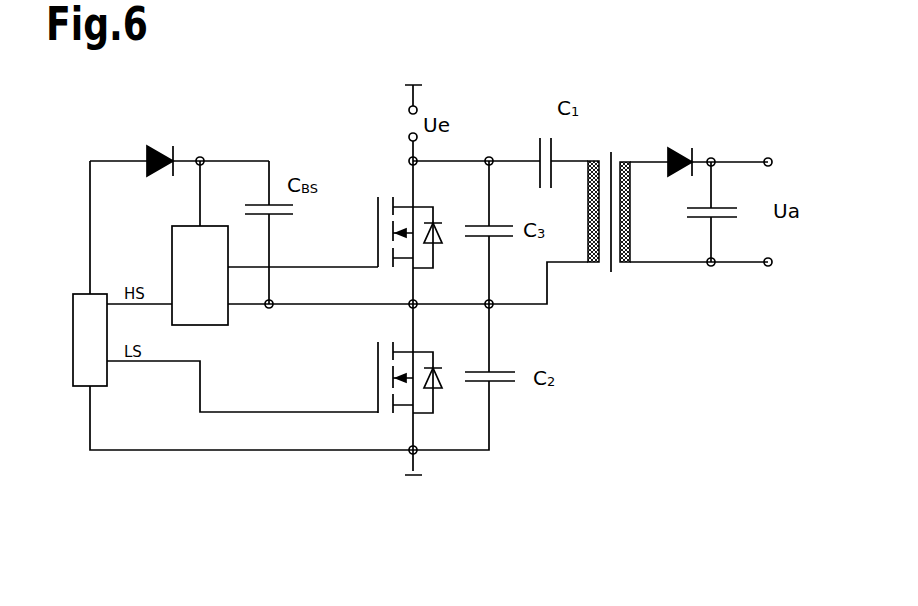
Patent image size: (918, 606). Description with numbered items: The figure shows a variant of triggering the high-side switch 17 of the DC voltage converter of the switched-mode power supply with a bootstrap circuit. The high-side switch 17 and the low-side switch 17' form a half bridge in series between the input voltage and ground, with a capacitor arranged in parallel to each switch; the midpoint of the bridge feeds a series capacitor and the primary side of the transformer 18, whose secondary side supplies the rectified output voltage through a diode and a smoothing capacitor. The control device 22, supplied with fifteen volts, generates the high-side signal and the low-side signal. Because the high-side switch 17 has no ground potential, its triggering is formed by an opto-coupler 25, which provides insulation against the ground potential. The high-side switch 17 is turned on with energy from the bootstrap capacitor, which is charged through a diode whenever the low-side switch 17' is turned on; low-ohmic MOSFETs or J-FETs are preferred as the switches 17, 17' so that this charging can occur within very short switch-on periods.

The opto-coupler 25 is at (183, 262).
The control device 22 is at (80, 333).
The high-side switch 17 is at (385, 232).
The low-side switch 17' is at (384, 377).
The transformer 18 is at (617, 312).